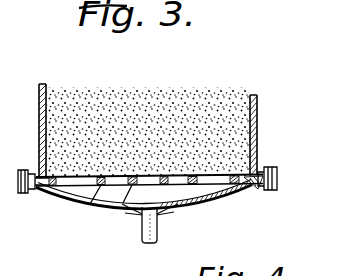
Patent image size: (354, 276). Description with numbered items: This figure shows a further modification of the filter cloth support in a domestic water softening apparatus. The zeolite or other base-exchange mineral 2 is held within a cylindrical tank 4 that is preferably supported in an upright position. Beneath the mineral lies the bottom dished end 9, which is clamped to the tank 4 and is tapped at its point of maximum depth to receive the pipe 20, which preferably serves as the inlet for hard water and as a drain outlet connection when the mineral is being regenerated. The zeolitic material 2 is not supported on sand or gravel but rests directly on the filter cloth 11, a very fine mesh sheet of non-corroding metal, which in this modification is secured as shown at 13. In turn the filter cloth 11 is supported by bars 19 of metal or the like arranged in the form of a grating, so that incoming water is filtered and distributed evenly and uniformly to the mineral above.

The zeolite or other base-exchange mineral 2 is at (222, 103).
The tank 4 is at (38, 100).
The bottom dished end 9 is at (86, 206).
The filter cloth 11 is at (37, 143).
The filter cloth securing means 13 is at (43, 190).
The bars 19 is at (107, 225).
The pipe 20 is at (158, 231).